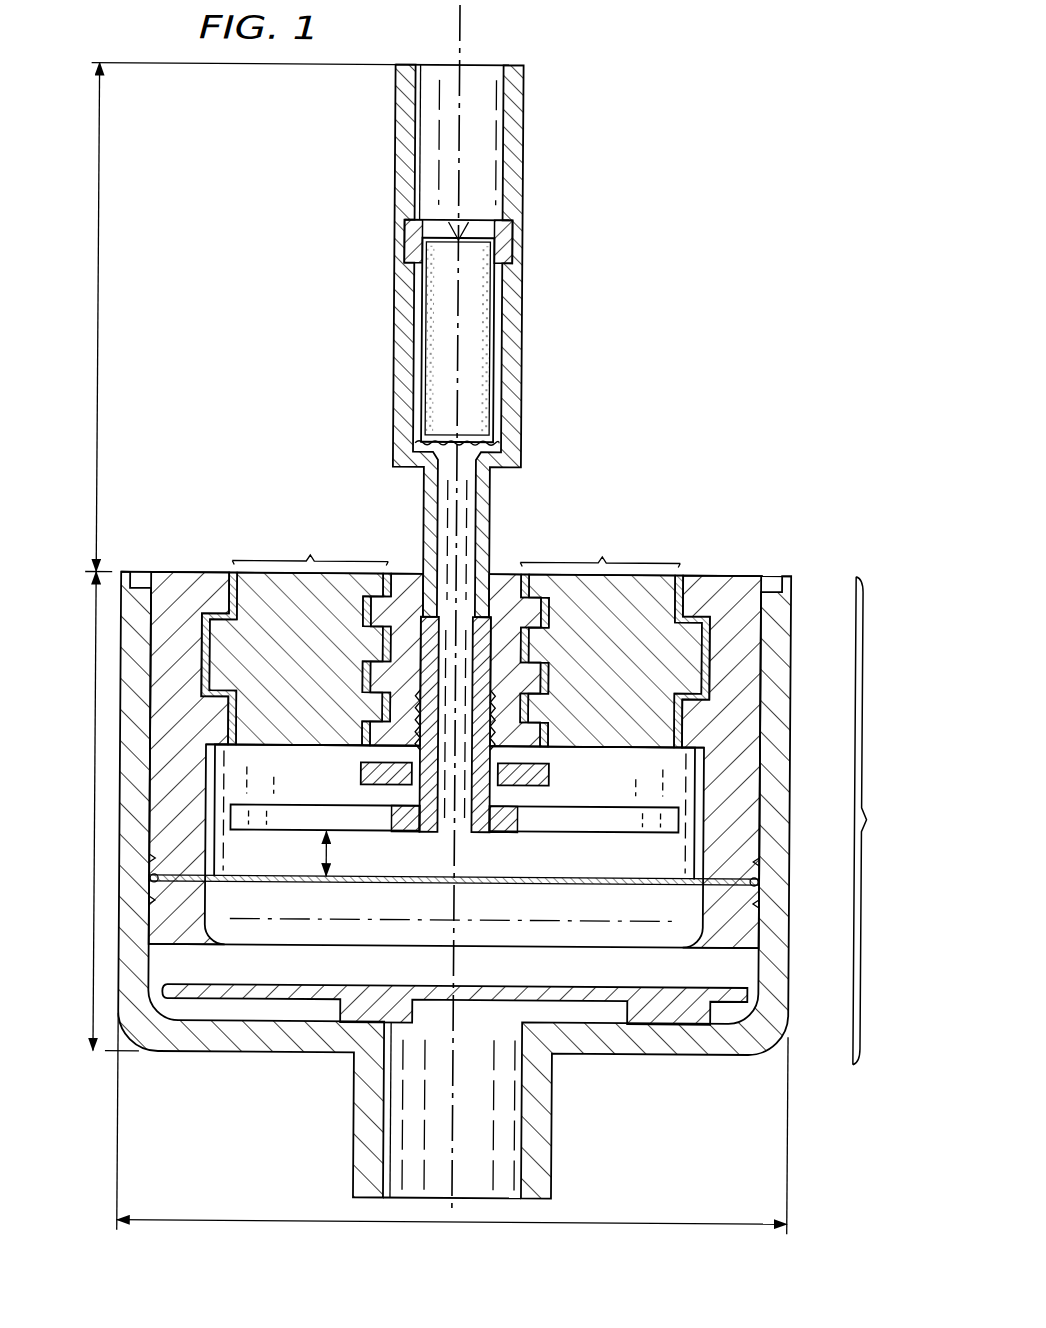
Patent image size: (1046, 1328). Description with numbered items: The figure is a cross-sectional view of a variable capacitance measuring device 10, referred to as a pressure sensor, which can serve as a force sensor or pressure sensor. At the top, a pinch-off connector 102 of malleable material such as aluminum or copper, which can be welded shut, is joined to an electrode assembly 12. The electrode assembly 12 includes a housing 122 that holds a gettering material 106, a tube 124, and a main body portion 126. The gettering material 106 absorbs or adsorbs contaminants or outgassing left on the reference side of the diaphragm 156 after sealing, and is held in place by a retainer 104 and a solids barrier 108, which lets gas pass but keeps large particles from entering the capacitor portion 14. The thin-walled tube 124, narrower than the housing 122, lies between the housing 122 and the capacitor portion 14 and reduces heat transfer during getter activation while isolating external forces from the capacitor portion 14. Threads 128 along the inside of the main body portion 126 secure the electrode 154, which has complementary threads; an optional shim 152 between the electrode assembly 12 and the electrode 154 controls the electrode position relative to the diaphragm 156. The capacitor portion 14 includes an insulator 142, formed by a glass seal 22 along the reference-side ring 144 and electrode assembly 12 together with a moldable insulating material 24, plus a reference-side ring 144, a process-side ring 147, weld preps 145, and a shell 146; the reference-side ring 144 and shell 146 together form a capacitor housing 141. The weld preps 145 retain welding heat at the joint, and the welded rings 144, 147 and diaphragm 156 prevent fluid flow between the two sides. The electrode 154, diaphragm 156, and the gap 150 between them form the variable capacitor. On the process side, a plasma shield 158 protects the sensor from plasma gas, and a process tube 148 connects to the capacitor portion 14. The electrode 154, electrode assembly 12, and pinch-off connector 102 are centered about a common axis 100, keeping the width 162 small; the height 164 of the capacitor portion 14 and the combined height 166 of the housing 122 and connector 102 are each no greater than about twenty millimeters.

The variable capacitance measuring device 10 is at (706, 151).
The electrode assembly 12 is at (580, 315).
The capacitor portion 14 is at (875, 821).
The glass seal 22 is at (548, 628).
The moldable insulating material 24 is at (322, 616).
The common axis 100 is at (462, 28).
The pinch-off connector 102 is at (517, 103).
The retainer 104 is at (505, 232).
The gettering material 106 is at (442, 332).
The solids barrier 108 is at (418, 446).
The housing 122 is at (512, 375).
The tube 124 is at (496, 500).
The main body portion 126 is at (395, 575).
The threads 128 is at (500, 704).
The capacitor housing 141 is at (224, 1098).
The insulator 142 is at (456, 543).
The reference-side ring 144 is at (188, 574).
The weld preps 145 is at (758, 858).
The shell 146 is at (124, 672).
The process-side ring 147 is at (200, 908).
The process tube 148 is at (360, 1137).
The gap 150 is at (326, 856).
The shim 152 is at (362, 774).
The electrode 154 is at (572, 806).
The diaphragm 156 is at (567, 884).
The plasma shield 158 is at (688, 1020).
The width 162 is at (655, 1224).
The height of the capacitor portion 164 is at (96, 830).
The combined height of housing and pinch-off connector 166 is at (96, 262).